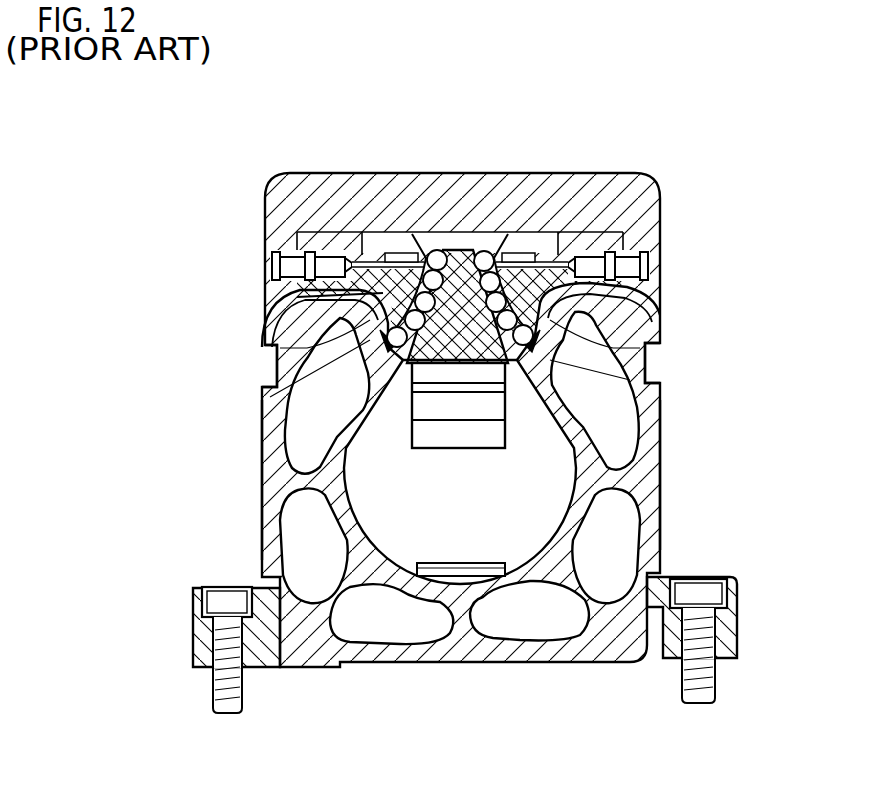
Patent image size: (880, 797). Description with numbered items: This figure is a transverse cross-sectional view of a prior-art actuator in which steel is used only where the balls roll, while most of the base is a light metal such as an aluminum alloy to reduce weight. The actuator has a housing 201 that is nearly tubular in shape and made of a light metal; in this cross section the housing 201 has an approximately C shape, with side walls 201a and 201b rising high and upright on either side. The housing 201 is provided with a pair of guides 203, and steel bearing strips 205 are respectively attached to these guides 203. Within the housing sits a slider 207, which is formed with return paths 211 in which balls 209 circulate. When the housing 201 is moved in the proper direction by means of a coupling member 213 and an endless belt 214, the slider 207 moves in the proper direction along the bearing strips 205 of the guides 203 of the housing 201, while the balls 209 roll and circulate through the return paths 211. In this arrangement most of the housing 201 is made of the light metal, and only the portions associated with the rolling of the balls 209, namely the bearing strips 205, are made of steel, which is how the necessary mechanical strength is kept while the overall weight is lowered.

The housing 201 is at (668, 477).
The side wall 201a is at (262, 443).
The side wall 201b is at (660, 505).
The guide 203 is at (260, 396).
The bearing strip 205 is at (260, 343).
The slider 207 is at (370, 262).
The ball 209 is at (268, 278).
The return path 211 is at (428, 250).
The coupling member 213 is at (428, 450).
The endless belt 214 is at (486, 570).